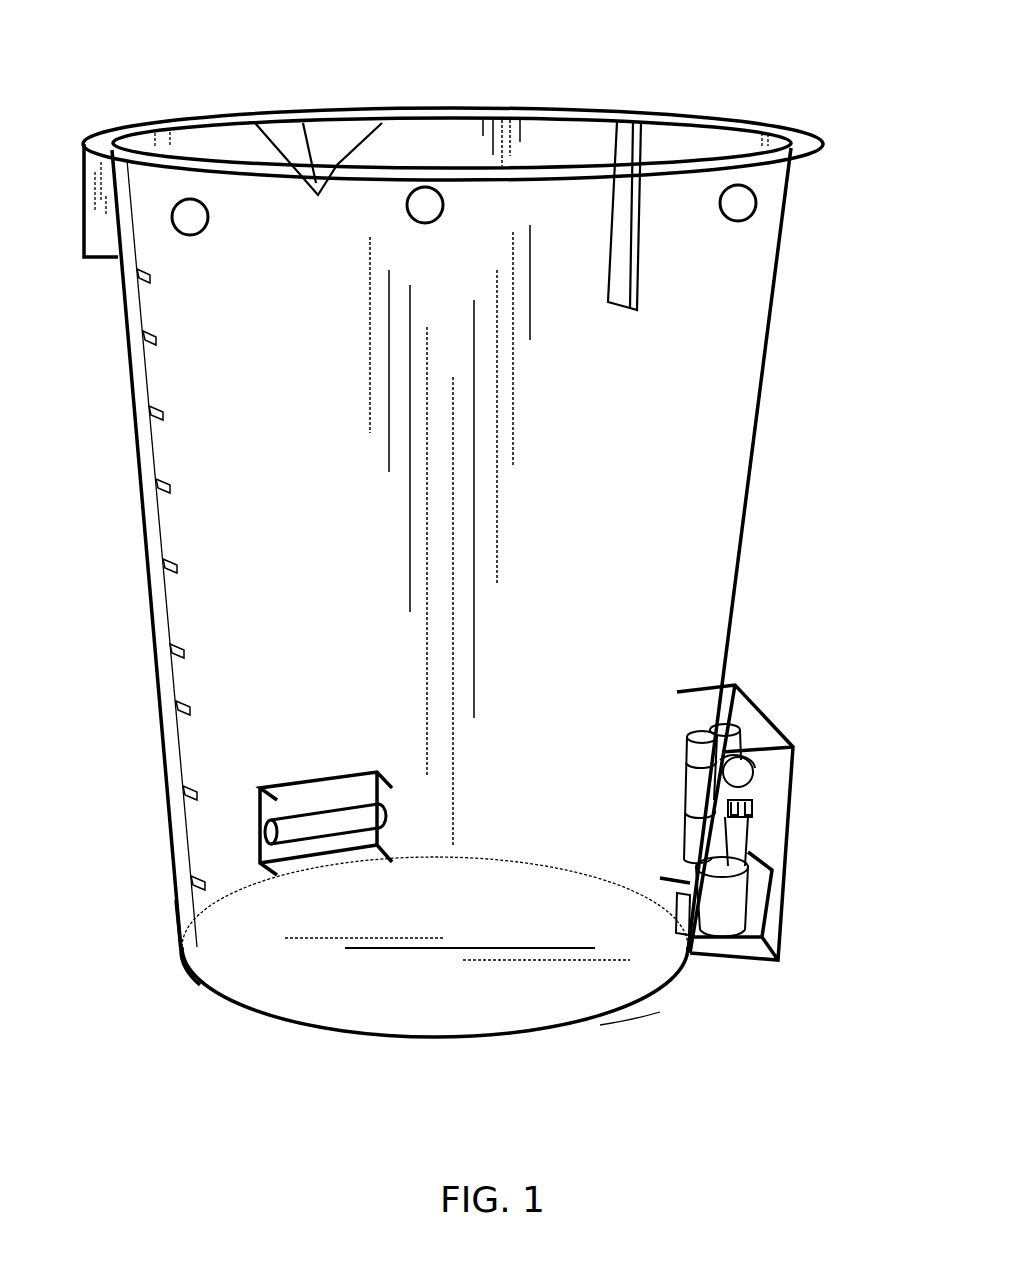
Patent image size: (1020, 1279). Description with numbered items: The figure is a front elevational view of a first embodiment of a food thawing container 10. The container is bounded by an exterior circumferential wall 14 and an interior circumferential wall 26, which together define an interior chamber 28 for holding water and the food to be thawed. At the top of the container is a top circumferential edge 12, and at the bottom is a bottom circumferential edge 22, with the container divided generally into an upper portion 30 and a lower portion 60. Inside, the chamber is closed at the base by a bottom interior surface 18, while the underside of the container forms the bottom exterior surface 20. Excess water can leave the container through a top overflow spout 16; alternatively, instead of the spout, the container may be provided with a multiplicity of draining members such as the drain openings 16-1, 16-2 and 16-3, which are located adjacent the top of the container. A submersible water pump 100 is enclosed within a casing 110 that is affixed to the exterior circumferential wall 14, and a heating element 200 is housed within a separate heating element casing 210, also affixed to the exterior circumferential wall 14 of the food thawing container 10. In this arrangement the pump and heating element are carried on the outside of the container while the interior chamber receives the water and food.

The food thawing container 10 is at (435, 556).
The top circumferential edge 12 is at (722, 104).
The exterior circumferential wall 14 is at (468, 277).
The top overflow spout 16 is at (333, 107).
The drain opening 16-1 is at (209, 217).
The drain opening 16-2 is at (444, 205).
The drain opening 16-3 is at (738, 222).
The bottom interior surface 18 is at (328, 990).
The bottom exterior surface 20 is at (330, 1041).
The bottom circumferential edge 22 is at (660, 1012).
The interior circumferential wall 26 is at (465, 136).
The interior chamber 28 is at (600, 157).
The upper portion 30 is at (130, 403).
The lower portion 60 is at (180, 948).
The submersible water pump 100 is at (770, 804).
The casing 110 is at (759, 705).
The heating element 200 is at (298, 777).
The heating element casing 210 is at (361, 769).